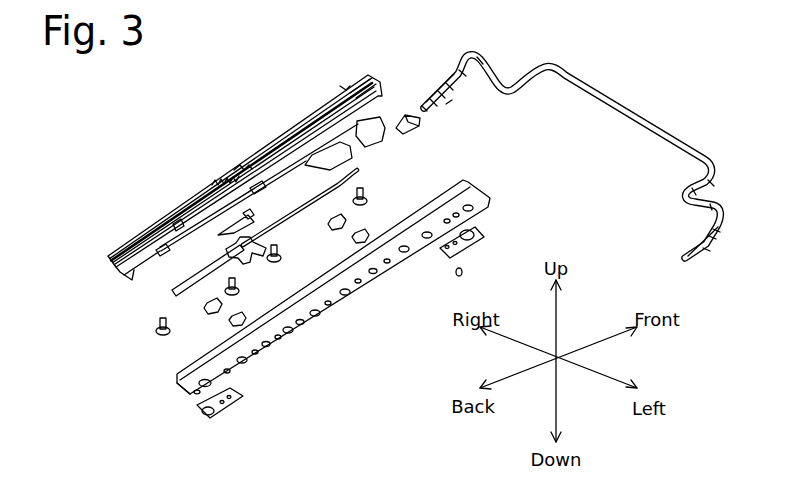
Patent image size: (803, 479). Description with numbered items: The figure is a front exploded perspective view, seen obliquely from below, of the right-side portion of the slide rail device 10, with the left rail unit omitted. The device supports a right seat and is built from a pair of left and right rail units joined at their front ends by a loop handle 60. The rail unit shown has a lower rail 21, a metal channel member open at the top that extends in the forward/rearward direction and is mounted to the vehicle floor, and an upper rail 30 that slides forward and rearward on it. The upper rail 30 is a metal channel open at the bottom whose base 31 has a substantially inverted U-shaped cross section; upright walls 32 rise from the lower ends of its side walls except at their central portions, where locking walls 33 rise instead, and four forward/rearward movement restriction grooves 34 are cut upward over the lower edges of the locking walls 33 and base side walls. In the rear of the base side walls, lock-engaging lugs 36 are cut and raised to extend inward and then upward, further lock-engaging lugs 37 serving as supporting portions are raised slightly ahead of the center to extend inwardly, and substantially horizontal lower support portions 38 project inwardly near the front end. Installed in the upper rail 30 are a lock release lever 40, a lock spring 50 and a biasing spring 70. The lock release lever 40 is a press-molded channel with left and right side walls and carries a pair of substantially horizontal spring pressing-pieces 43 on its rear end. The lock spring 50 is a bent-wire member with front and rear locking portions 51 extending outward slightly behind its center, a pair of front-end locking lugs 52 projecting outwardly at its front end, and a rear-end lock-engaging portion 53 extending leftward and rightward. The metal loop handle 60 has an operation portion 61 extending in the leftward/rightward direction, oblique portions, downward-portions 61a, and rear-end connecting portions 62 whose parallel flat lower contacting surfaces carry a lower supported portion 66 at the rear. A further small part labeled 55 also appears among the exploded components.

The slide rail device 10 is at (333, 305).
The lower rail 21 is at (403, 260).
The upper rail 30 is at (223, 172).
The base 31 is at (318, 106).
The upright walls 32 is at (290, 124).
The locking walls 33 is at (236, 167).
The forward/rearward movement restriction grooves 34 is at (235, 171).
The lock-engaging lugs 36 is at (160, 254).
The lock-engaging lugs 37 is at (281, 128).
The lower support portions 38 is at (356, 100).
The lock release lever 40 is at (385, 120).
The spring pressing-pieces 43 is at (233, 218).
The lock spring 50 is at (208, 318).
The locking portions 51 is at (228, 251).
The front-end locking lugs 52 is at (340, 178).
The rear-end lock-engaging portion 53 is at (172, 293).
The clip 55 is at (370, 234).
The loop handle 60 is at (558, 135).
The operation portion 61 is at (628, 113).
The downward-portions 61a is at (460, 67).
The rear-end connecting portions 62 is at (440, 103).
The lower supported portion 66 is at (444, 107).
The biasing spring 70 is at (413, 128).